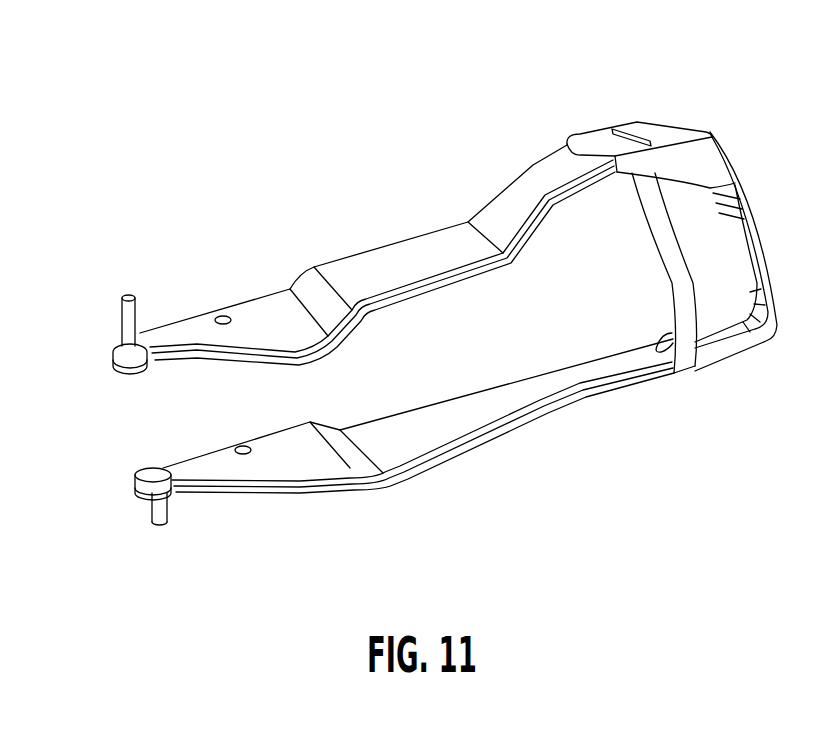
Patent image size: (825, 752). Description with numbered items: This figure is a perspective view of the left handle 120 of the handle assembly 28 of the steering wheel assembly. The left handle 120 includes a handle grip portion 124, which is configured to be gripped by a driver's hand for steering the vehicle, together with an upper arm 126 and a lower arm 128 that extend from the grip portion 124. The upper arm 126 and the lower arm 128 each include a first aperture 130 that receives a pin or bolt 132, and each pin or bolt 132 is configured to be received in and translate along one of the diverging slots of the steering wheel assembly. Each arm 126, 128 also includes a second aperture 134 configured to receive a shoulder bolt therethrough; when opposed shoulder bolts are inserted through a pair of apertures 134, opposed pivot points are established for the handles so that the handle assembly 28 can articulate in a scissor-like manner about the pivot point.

The handle assembly 28 is at (266, 107).
The left handle 120 is at (554, 431).
The handle grip portion 124 is at (743, 192).
The upper arm 126 is at (414, 248).
The lower arm 128 is at (460, 412).
The first aperture 130 is at (118, 353).
The pin or bolt 132 is at (138, 313).
The second aperture 134 is at (228, 316).